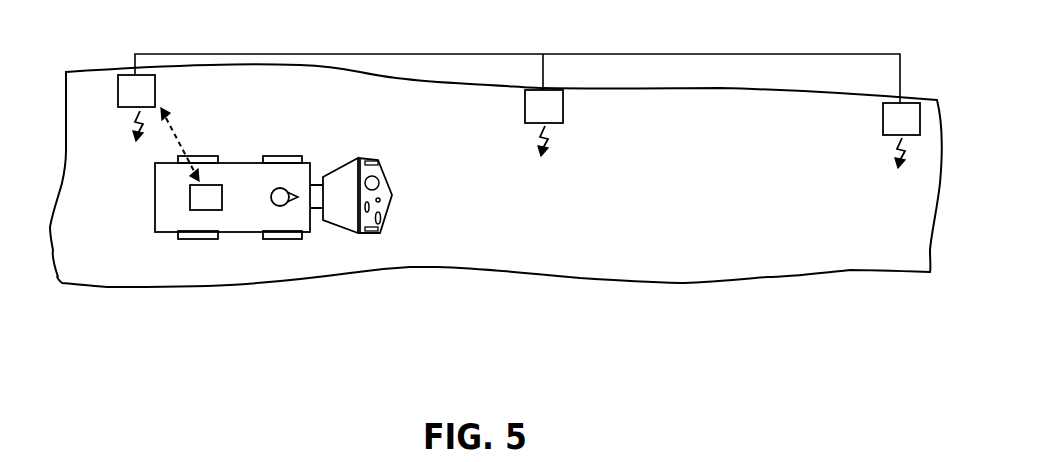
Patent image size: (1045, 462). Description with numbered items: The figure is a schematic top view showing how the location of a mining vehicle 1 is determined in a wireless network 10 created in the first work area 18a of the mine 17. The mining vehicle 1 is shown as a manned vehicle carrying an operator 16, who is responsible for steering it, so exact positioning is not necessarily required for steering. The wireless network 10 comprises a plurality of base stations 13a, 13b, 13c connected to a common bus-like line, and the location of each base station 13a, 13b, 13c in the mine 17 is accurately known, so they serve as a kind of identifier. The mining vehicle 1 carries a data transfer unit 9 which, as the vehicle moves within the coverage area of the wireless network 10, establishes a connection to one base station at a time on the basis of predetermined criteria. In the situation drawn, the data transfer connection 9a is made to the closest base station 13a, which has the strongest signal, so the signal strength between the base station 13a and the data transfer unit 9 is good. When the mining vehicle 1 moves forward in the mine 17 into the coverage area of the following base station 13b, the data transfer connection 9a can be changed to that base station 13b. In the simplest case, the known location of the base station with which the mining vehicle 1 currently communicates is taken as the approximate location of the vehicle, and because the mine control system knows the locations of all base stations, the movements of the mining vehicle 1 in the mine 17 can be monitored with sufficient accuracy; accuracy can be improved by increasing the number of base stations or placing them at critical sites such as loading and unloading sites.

The mining vehicle 1 is at (248, 217).
The data transfer unit 9 is at (203, 195).
The data transfer connection 9a is at (177, 133).
The wireless network 10 is at (617, 54).
The base station 13a is at (133, 85).
The base station 13b is at (555, 107).
The base station 13c is at (897, 112).
The operator 16 is at (281, 188).
The mine 17 is at (686, 240).
The first work area 18a is at (590, 231).